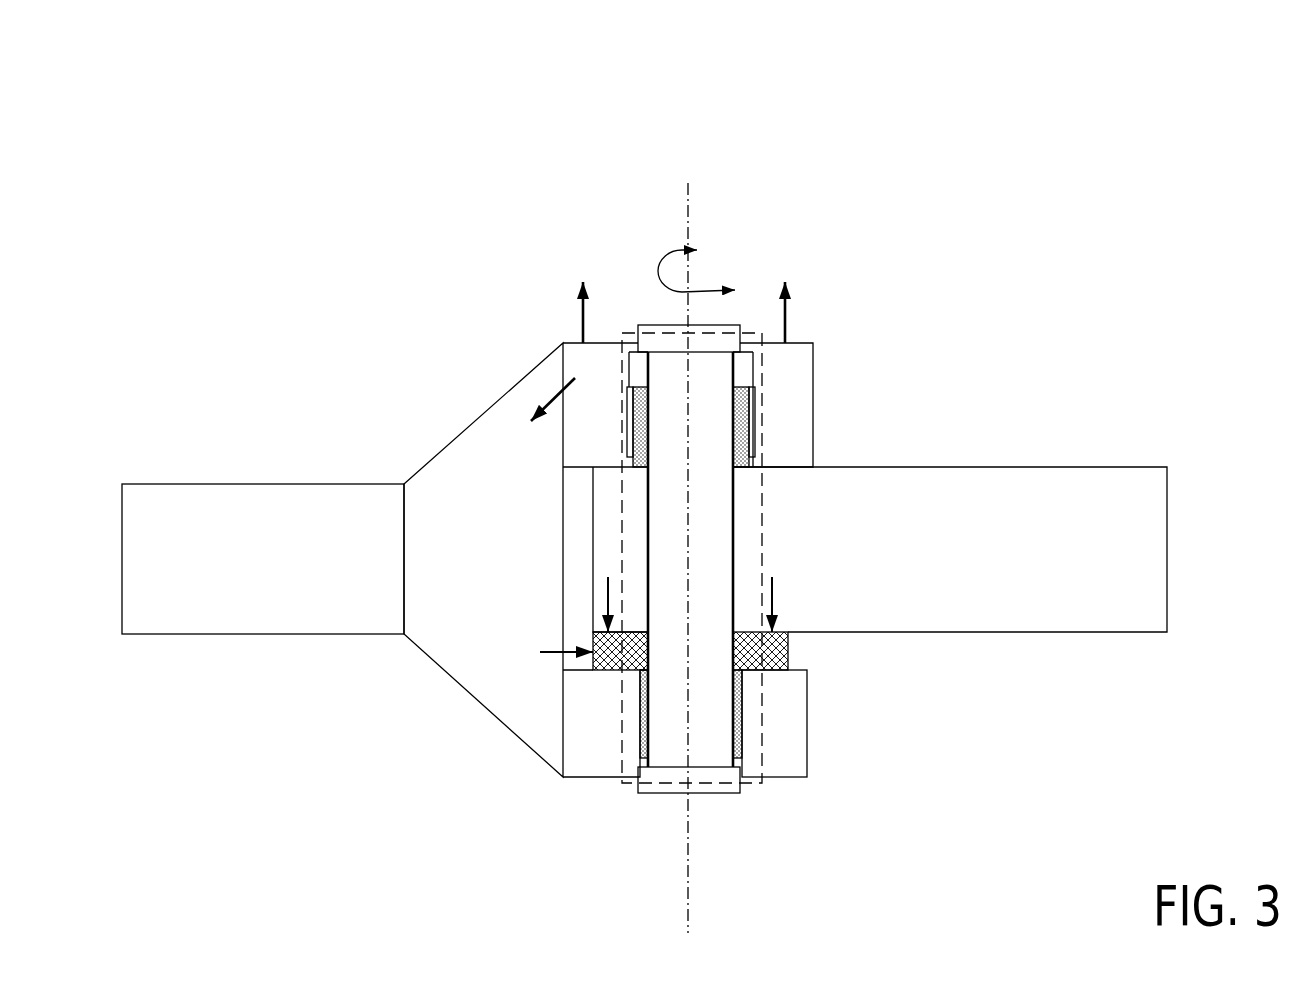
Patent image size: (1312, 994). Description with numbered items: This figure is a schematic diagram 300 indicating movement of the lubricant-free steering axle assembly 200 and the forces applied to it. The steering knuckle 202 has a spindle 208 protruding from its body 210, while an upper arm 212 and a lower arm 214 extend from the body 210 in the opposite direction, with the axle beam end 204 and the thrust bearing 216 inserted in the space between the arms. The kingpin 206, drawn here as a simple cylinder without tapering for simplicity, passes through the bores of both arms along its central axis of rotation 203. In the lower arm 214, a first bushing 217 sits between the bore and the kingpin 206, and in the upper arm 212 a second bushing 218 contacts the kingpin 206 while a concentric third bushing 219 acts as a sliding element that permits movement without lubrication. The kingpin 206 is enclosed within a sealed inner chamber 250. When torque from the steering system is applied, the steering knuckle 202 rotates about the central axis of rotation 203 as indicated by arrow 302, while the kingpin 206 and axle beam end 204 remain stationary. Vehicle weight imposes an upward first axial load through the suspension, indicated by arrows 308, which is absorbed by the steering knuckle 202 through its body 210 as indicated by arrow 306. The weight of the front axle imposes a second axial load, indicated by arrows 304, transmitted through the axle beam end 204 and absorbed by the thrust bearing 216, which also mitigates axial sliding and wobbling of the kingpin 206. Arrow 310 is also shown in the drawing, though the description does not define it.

The steering axle assembly 200 is at (368, 292).
The steering knuckle 202 is at (452, 418).
The central axis of rotation 203 is at (688, 830).
The axle beam end 204 is at (939, 560).
The kingpin 206 is at (684, 448).
The spindle 208 is at (295, 581).
The body 210 is at (499, 553).
The upper arm 212 is at (609, 425).
The lower arm 214 is at (613, 735).
The thrust bearing 216 is at (593, 640).
The first bushing 217 is at (737, 733).
The second bushing 218 is at (745, 443).
The third bushing 219 is at (757, 402).
The inner chamber 250 is at (762, 503).
The schematic diagram 300 is at (287, 82).
The arrow 302 is at (653, 272).
The arrows 304 is at (580, 314).
The arrow 306 is at (556, 392).
The arrows 308 is at (608, 602).
The purge gas supply 310 is at (549, 657).